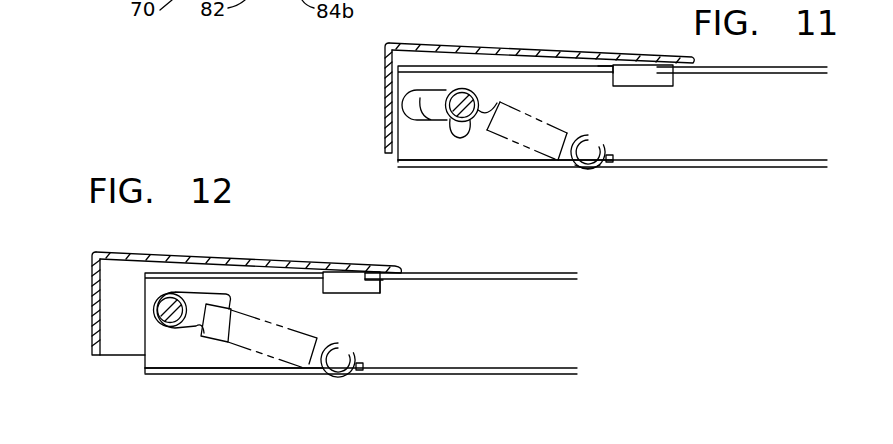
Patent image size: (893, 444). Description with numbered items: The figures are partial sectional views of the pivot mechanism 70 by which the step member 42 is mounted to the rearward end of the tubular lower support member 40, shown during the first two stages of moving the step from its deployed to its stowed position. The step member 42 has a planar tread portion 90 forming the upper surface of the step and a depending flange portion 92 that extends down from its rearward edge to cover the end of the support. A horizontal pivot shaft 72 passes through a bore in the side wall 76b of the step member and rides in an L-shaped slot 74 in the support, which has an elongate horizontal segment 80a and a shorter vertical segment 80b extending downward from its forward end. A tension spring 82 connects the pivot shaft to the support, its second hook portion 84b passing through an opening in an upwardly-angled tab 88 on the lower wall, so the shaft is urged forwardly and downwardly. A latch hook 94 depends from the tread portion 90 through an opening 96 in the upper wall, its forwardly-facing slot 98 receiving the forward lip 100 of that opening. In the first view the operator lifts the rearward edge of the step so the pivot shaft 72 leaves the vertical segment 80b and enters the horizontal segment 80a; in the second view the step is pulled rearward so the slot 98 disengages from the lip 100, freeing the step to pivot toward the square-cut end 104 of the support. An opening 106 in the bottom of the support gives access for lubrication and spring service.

In FIG. 11, the lower support member 40 is at (757, 167).
In FIG. 12, the lower support member 40 is at (500, 373).
In FIG. 11, the step member 42 is at (503, 78).
In FIG. 12, the step member 42 is at (210, 283).
In FIG. 11, the pivot mechanism 70 is at (477, 178).
In FIG. 12, the pivot mechanism 70 is at (227, 390).
In FIG. 11, the pivot shaft 72 is at (480, 101).
In FIG. 12, the pivot shaft 72 is at (200, 298).
In FIG. 11, the L-shaped slot 74 is at (390, 133).
In FIG. 12, the side wall 76b is at (115, 348).
In FIG. 11, the horizontal segment 80a is at (410, 108).
In FIG. 12, the horizontal segment 80a is at (194, 312).
In FIG. 11, the vertical segment 80b is at (447, 125).
In FIG. 11, the tension spring 82 is at (535, 155).
In FIG. 12, the tension spring 82 is at (273, 369).
In FIG. 11, the second hook portion 84b is at (585, 169).
In FIG. 11, the upwardly-angled tab 88 is at (614, 158).
In FIG. 12, the upwardly-angled tab 88 is at (360, 366).
In FIG. 11, the tread portion 90 is at (475, 44).
In FIG. 12, the tread portion 90 is at (128, 250).
In FIG. 11, the depending flange portion 92 is at (385, 93).
In FIG. 12, the depending flange portion 92 is at (92, 301).
In FIG. 11, the latch hook 94 is at (663, 86).
In FIG. 12, the latch hook 94 is at (347, 289).
In FIG. 11, the opening 96 is at (600, 58).
In FIG. 12, the slot 98 is at (383, 282).
In FIG. 12, the forward lip 100 is at (389, 277).
In FIG. 11, the square-cut end 104 is at (397, 156).
In FIG. 12, the square-cut end 104 is at (139, 350).
In FIG. 11, the opening 106 is at (503, 163).
In FIG. 12, the opening 106 is at (254, 373).